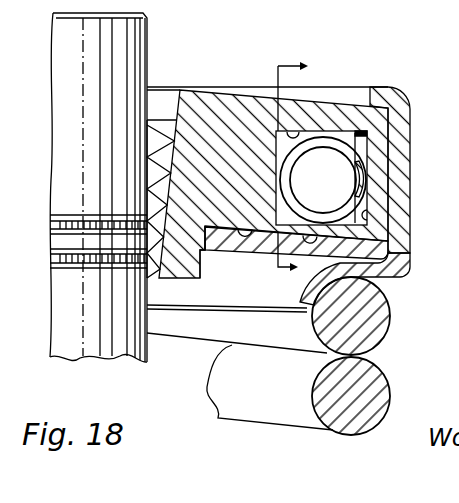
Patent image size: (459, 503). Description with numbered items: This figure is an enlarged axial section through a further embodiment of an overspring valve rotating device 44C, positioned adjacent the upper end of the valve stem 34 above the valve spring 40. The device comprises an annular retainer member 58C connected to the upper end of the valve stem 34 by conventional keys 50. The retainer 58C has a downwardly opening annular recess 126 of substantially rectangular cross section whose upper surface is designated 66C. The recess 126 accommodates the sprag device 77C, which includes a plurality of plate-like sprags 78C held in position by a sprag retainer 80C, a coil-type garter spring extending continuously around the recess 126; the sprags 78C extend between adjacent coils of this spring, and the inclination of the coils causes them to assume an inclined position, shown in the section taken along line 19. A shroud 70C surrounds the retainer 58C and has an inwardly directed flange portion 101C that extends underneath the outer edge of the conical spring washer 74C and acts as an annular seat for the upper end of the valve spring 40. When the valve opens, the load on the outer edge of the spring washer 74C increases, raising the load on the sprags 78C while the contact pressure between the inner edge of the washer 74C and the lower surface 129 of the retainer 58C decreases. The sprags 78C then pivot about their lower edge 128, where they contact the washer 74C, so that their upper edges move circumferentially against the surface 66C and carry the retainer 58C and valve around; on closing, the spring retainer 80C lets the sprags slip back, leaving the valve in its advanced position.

The valve stem 34 is at (63, 153).
The keys 50 is at (157, 133).
The annular retainer member 58C is at (203, 112).
The upper surface of recess 66C is at (286, 130).
The section line 19- 19 is at (304, 168).
The sprag device 77C is at (324, 136).
The valve rotating device 44C is at (376, 170).
The shroud 70C is at (400, 137).
The sprag retainer 80C is at (361, 176).
The annular recess 126 is at (371, 217).
The spring washer 74C is at (375, 250).
The sprags 78C is at (288, 148).
The lower surface of retainer 129 is at (237, 228).
The lower edge of sprag 128 is at (281, 236).
The inwardly directed flange portion 101C is at (372, 296).
The valve spring 40 is at (370, 333).